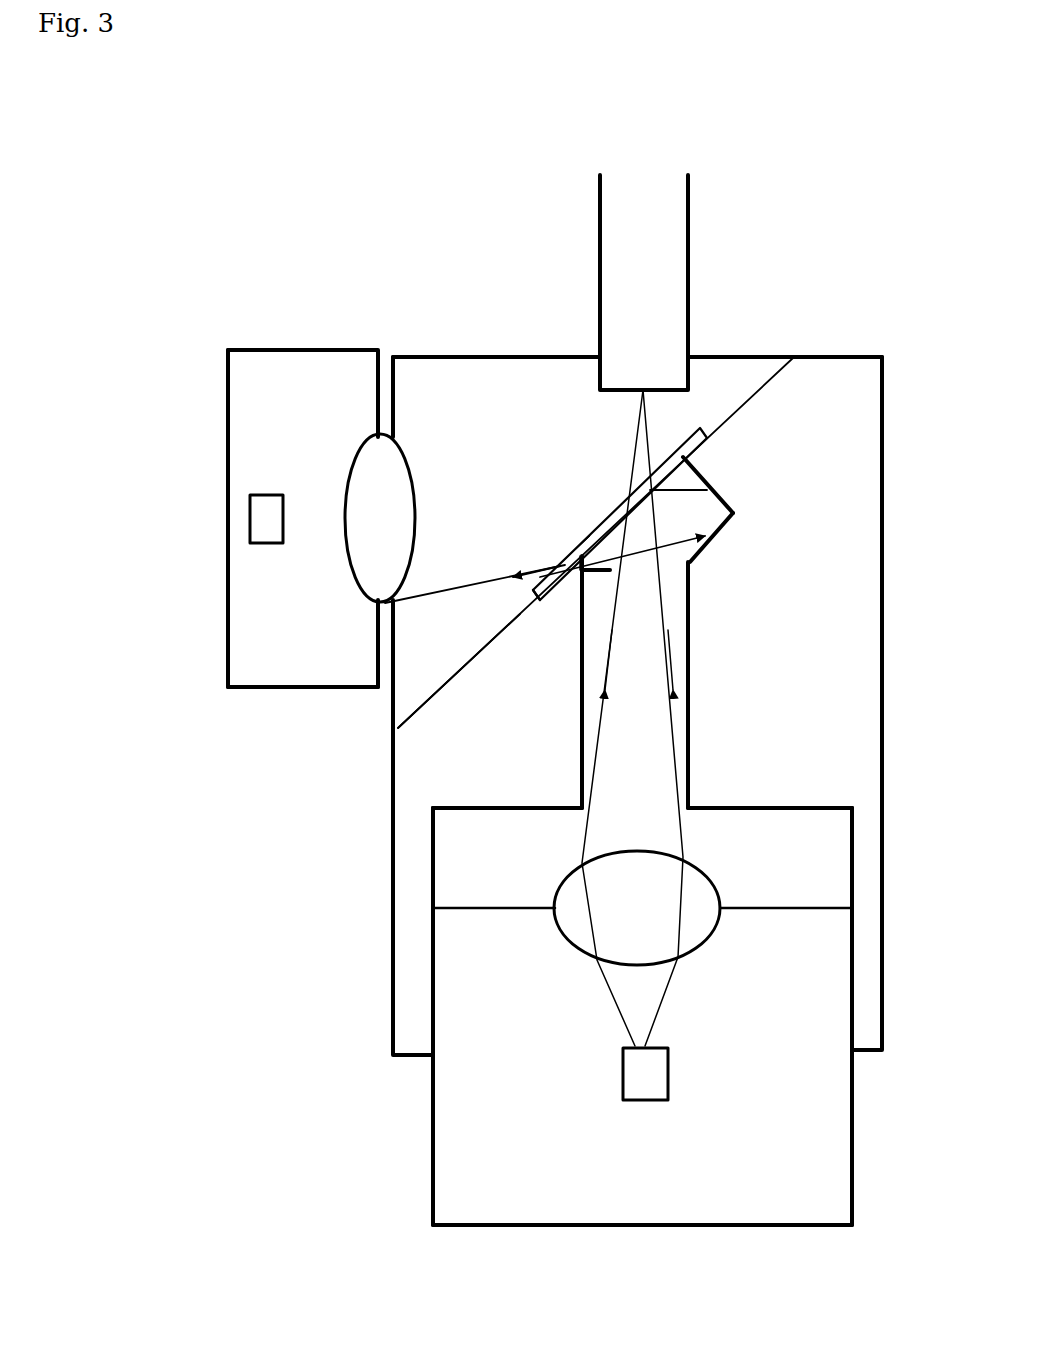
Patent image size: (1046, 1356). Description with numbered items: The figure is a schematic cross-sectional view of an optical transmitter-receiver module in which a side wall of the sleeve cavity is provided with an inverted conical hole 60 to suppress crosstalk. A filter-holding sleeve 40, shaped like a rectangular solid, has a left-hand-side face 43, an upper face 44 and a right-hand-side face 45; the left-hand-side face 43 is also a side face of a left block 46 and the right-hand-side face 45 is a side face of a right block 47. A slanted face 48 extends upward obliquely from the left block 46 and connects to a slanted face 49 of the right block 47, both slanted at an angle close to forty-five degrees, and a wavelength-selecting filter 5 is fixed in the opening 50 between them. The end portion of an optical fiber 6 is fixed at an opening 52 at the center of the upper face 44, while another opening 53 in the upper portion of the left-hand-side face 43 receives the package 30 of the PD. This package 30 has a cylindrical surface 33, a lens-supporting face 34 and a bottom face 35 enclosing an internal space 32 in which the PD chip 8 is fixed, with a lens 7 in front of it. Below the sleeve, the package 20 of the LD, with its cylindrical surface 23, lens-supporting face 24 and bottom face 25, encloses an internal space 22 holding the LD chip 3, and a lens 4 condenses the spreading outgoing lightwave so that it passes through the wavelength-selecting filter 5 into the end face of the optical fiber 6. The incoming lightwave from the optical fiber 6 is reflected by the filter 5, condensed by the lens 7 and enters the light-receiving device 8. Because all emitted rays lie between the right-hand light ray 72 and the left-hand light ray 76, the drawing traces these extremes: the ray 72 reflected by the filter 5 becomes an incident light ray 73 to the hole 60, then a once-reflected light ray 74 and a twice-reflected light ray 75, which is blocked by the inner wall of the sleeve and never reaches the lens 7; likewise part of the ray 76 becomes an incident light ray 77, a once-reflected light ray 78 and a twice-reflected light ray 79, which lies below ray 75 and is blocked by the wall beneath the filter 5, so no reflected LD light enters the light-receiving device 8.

The LD chip 3 is at (645, 1074).
The lens 4 is at (637, 908).
The wavelength-selecting filter 5 is at (595, 536).
The optical fiber 6 is at (644, 282).
The lens 7 is at (380, 518).
The PD chip 8 is at (266, 519).
The package 20 is at (640, 1050).
The internal space 22 is at (684, 1145).
The cylindrical surface 23 is at (433, 1148).
The lens-supporting face 24 is at (521, 909).
The bottom face 25 is at (693, 1228).
The package 30 is at (285, 499).
The internal space 32 is at (294, 463).
The cylindrical surface 33 is at (311, 688).
The lens-supporting face 34 is at (378, 396).
The bottom face 35 is at (228, 621).
The filter-holding sleeve 40 is at (652, 684).
The left-hand-side face 43 is at (395, 706).
The upper face 44 is at (490, 356).
The right-hand-side face 45 is at (886, 890).
The left block 46 is at (513, 704).
The right block 47 is at (770, 702).
The slanted face 48 is at (537, 604).
The slanted face 49 is at (734, 407).
The opening 50 is at (615, 522).
The opening 52 is at (690, 356).
The opening 53 is at (393, 437).
The inverted conical hole 60 is at (718, 487).
The light ray 72 is at (664, 718).
The incident light ray 73 is at (705, 480).
The once-reflected light ray 74 is at (733, 513).
The twice-reflected light ray 75 is at (475, 584).
The light ray 76 is at (612, 718).
The incident light ray 77 is at (678, 509).
The once-reflected light ray 78 is at (735, 515).
The twice-reflected light ray 79 is at (610, 572).